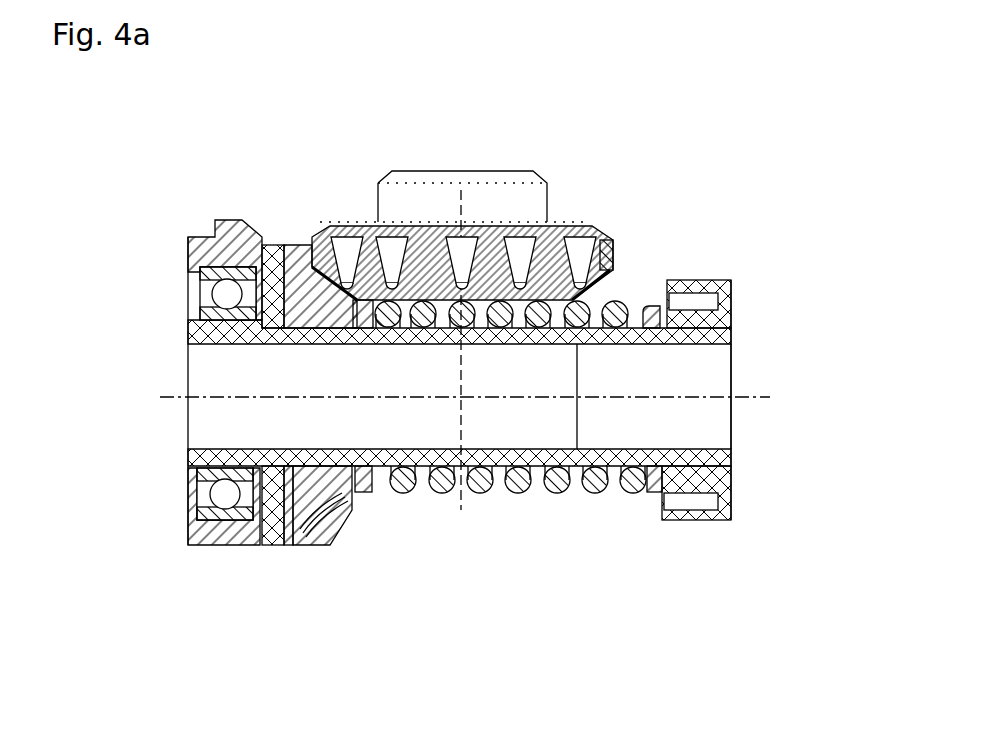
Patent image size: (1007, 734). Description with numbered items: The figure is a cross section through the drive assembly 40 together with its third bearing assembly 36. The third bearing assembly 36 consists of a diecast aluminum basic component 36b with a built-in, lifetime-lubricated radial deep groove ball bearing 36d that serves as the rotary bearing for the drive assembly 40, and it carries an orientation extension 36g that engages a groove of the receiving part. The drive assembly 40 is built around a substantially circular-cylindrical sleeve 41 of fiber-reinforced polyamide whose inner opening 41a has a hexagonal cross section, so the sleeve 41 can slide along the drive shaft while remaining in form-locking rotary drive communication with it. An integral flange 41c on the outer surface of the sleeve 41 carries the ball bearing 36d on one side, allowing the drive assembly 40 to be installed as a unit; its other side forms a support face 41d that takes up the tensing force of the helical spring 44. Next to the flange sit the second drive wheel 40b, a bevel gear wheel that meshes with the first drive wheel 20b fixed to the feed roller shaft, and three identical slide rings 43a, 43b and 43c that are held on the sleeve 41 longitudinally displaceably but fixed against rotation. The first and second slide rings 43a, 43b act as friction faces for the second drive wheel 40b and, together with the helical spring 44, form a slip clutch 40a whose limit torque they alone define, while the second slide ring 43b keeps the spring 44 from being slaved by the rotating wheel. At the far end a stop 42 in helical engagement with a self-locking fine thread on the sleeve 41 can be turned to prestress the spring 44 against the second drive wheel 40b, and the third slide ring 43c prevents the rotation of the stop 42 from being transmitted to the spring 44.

The first drive wheel 20b is at (480, 197).
The third bearing assembly 36 is at (147, 577).
The basic component 36b is at (188, 260).
The radial deep groove ball bearing 36d is at (185, 486).
The orientation extension 36g is at (220, 218).
The drive assembly 40 is at (623, 578).
The slip clutch 40a is at (281, 211).
The second drive wheel 40b is at (342, 545).
The sleeve 41 is at (463, 466).
The opening 41a is at (680, 450).
The flange 41c is at (257, 547).
The support face 41d is at (312, 238).
The stop 42 is at (723, 500).
The first slide ring 43a is at (290, 448).
The second slide ring 43b is at (370, 344).
The third slide ring 43c is at (658, 300).
The helical spring 44 is at (627, 300).